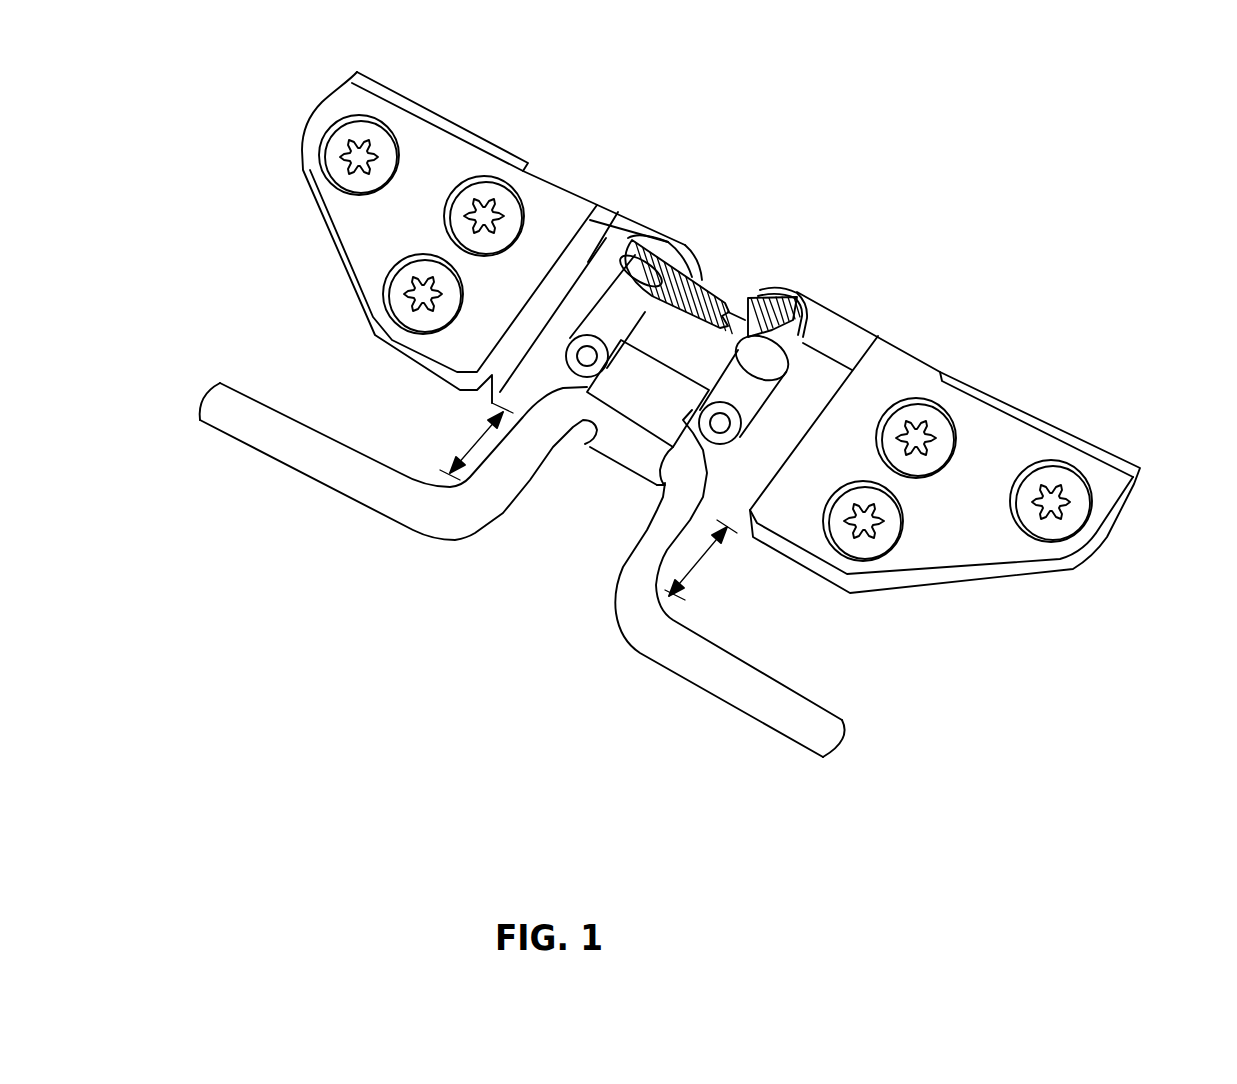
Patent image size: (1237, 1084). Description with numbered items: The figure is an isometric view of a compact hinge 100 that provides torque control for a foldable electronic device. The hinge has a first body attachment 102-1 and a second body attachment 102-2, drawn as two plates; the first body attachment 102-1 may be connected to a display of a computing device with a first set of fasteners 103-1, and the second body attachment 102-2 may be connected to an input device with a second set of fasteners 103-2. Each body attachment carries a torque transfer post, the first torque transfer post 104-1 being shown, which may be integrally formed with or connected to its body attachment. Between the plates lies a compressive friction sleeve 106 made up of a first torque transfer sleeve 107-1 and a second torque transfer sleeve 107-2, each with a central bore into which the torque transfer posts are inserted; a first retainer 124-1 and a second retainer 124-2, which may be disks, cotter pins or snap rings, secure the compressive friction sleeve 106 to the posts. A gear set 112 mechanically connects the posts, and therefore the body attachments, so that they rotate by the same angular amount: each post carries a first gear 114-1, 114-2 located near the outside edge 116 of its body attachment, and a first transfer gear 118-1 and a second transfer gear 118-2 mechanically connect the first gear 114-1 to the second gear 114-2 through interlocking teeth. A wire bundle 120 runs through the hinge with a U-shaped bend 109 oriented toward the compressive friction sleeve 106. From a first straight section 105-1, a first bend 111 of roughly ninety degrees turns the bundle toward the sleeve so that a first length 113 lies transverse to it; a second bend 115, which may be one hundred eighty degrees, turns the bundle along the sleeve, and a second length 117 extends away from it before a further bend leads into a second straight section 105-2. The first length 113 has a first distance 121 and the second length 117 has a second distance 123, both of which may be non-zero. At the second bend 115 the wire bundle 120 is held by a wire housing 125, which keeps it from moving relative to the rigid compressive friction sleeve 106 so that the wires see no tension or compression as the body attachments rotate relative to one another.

The compact hinge 100 is at (1020, 128).
The first body attachment 102-1 is at (557, 200).
The second body attachment 102-2 is at (905, 383).
The first set of fasteners 103-1 is at (362, 148).
The second set of fasteners 103-2 is at (1052, 505).
The first torque transfer post 104-1 is at (590, 353).
The first straight section 105-1 is at (737, 682).
The second straight section 105-2 is at (307, 450).
The compressive friction sleeve 106 is at (745, 295).
The first torque transfer sleeve 107-1 is at (596, 305).
The second torque transfer sleeve 107-2 is at (812, 316).
The U-shaped bend 109 is at (560, 562).
The first bend 111 is at (613, 636).
The gear set 112 is at (742, 250).
The first length 113 is at (645, 547).
The first gear 114-1 is at (680, 258).
The second gear 114-2 is at (790, 343).
The second bend 115 is at (636, 499).
The outside edge 116 is at (793, 282).
The second length 117 is at (507, 458).
The first transfer gear 118-1 is at (722, 290).
The second transfer gear 118-2 is at (705, 340).
The wire bundle 120 is at (797, 700).
The first distance 121 is at (700, 560).
The second distance 123 is at (460, 452).
The first retainer 124-1 is at (568, 344).
The second retainer 124-2 is at (736, 440).
The wire housing 125 is at (613, 388).